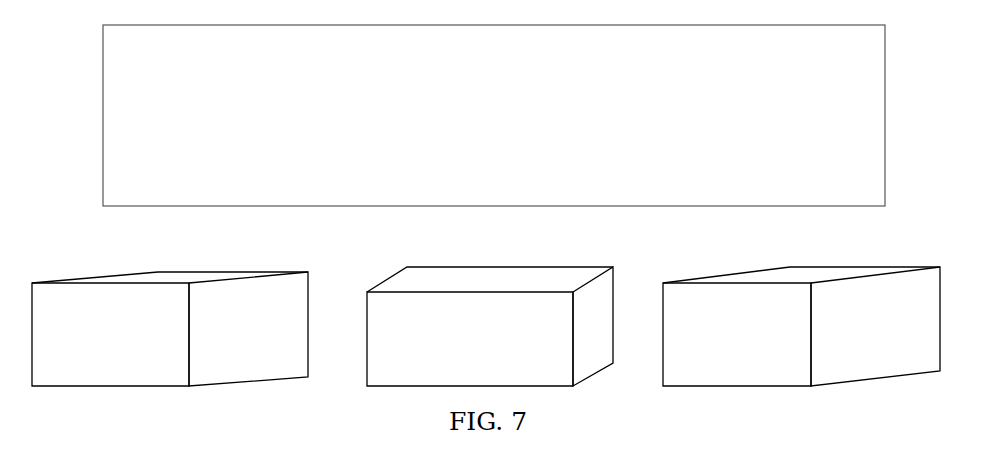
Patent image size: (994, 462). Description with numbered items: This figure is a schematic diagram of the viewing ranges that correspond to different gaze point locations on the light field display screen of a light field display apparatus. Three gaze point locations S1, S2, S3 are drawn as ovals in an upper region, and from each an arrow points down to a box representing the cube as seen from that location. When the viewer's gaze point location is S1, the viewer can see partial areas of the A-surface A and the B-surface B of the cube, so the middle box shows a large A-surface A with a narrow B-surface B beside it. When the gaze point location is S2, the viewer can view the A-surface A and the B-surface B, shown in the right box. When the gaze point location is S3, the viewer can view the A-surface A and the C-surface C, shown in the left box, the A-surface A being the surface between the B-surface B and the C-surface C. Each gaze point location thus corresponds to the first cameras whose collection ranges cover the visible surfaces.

The gaze point location S1 is at (504, 246).
The gaze point location S2 is at (804, 246).
The gaze point location S3 is at (198, 255).
The A-surface A is at (564, 326).
The B-surface B is at (756, 326).
The C-surface C is at (170, 329).